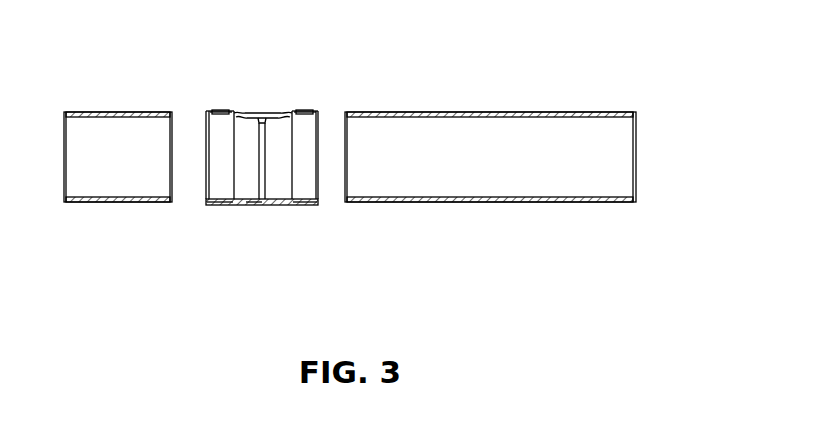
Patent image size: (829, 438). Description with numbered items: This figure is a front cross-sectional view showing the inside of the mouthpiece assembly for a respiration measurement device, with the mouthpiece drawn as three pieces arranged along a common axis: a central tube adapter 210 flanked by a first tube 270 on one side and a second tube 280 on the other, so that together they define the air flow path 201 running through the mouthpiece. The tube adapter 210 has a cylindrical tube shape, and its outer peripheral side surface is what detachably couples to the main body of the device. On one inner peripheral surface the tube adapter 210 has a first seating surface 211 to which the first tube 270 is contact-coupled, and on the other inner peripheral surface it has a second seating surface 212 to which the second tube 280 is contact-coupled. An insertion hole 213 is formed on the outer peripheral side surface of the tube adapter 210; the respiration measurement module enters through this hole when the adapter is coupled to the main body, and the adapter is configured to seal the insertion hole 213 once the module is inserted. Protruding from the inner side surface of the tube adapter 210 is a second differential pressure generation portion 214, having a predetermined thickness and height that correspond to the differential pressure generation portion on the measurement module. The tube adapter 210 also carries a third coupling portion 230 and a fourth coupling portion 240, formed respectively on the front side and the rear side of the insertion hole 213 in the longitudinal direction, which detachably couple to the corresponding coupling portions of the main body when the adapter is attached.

The air flow path 201 is at (313, 133).
The tube adapter 210 is at (273, 216).
The first seating surface 211 is at (222, 200).
The second seating surface 212 is at (305, 199).
The insertion hole 213 is at (262, 112).
The second differential pressure generation portion 214 is at (264, 198).
The third coupling portion 230 is at (221, 109).
The fourth coupling portion 240 is at (303, 109).
The first tube 270 is at (119, 206).
The second tube 280 is at (500, 107).